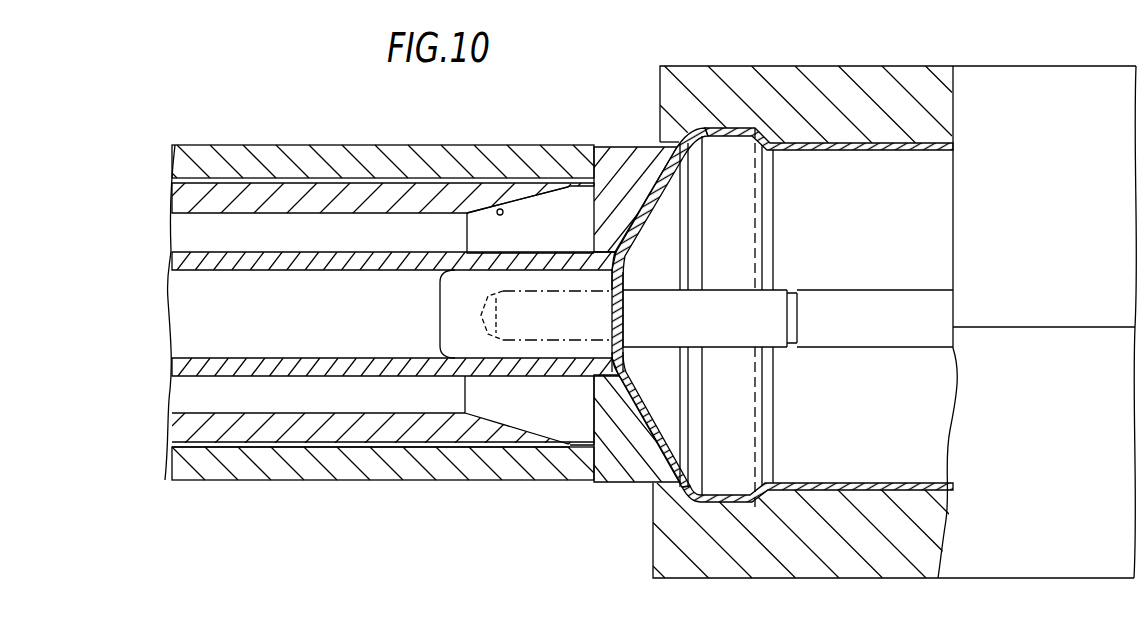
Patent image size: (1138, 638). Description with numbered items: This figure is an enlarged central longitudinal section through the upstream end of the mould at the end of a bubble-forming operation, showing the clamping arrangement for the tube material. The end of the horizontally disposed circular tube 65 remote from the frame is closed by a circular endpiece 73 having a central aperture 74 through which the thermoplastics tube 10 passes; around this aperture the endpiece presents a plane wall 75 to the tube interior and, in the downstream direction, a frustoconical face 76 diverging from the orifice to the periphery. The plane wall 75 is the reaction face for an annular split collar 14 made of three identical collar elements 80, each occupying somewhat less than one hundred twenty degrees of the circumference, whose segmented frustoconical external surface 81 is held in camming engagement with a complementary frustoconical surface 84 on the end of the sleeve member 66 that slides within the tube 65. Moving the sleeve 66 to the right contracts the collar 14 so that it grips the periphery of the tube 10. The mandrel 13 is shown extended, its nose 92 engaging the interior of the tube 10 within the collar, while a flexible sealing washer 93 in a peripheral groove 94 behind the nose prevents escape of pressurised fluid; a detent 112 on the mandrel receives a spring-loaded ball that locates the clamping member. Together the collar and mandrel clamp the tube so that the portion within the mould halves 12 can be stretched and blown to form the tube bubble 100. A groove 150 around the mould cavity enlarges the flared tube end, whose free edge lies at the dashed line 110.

The thermoplastics tube 10 is at (283, 357).
The mould halves 12 is at (1051, 223).
The mandrel 13 is at (860, 338).
The annular split collar 14 is at (463, 397).
The tube 65 is at (285, 474).
The sleeve member 66 is at (180, 428).
The endpiece 73 is at (603, 484).
The central aperture 74 is at (603, 367).
The plane wall 75 is at (592, 388).
The frustoconical face 76 is at (668, 187).
The collar elements 80 is at (552, 419).
The frustoconical external surface 81 is at (545, 184).
The frustoconical surface 84 is at (499, 209).
The nose 92 is at (437, 320).
The sealing washer 93 is at (634, 266).
The peripheral groove 94 is at (625, 317).
The tube bubble 100 is at (910, 483).
The dashed line 110 is at (755, 222).
The detent 112 is at (792, 291).
The groove 150 is at (690, 126).